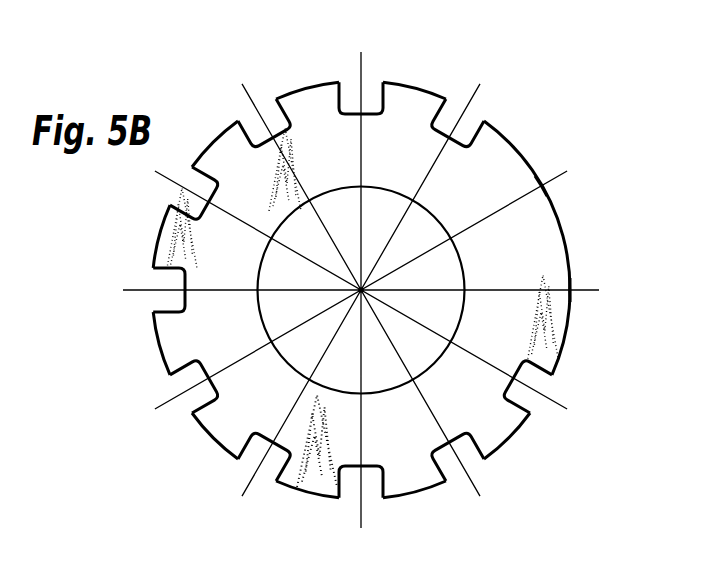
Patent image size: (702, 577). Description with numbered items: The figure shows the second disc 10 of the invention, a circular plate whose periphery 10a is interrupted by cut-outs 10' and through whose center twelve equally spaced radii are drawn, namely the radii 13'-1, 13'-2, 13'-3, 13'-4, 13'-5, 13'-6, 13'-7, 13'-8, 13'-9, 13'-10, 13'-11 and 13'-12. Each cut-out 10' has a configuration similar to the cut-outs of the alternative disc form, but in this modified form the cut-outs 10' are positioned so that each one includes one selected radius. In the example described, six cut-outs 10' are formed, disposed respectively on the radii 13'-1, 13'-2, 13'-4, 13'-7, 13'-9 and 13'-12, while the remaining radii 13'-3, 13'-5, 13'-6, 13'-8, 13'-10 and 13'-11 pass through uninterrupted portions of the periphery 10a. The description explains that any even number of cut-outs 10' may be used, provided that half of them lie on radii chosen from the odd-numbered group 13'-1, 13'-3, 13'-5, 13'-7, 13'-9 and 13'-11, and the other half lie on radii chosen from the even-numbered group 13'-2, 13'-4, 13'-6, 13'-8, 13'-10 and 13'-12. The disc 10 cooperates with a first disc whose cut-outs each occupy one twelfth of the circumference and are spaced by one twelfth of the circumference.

The disc 10 is at (369, 290).
The outer peripheral edge of disc 10a is at (557, 203).
The cut-out 10' is at (441, 70).
The radius 13'-1 is at (397, 73).
The radius 13'-2 is at (217, 103).
The radius 13'-3 is at (151, 192).
The radius 13'-4 is at (128, 280).
The radius 13'-5 is at (155, 387).
The radius 13'-6 is at (224, 460).
The radius 13'-7 is at (394, 504).
The radius 13'-8 is at (488, 469).
The radius 13'-9 is at (561, 387).
The radius 13'-10 is at (608, 302).
The radius 13'-11 is at (581, 160).
The radius 13'-12 is at (502, 105).